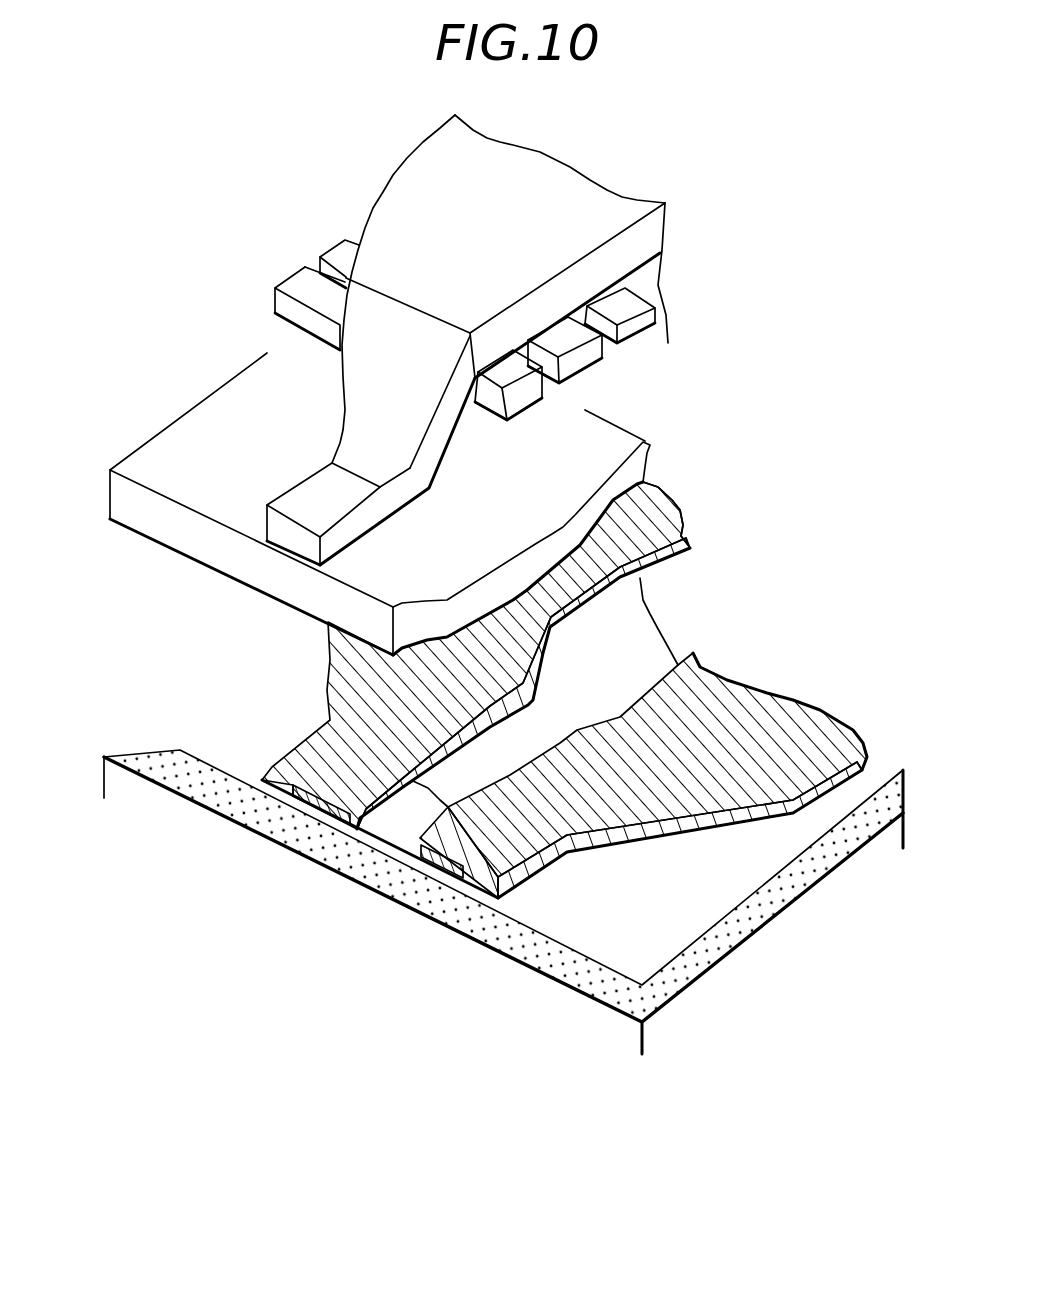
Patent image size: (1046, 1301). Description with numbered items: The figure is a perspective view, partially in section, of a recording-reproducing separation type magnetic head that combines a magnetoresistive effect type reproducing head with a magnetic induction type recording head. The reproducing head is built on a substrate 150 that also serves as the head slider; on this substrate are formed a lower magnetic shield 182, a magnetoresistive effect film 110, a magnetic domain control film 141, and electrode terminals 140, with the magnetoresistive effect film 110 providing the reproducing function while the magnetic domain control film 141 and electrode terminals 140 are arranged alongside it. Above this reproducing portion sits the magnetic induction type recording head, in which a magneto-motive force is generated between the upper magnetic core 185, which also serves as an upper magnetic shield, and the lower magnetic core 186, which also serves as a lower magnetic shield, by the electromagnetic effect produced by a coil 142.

The magnetoresistive effect film 110 is at (380, 873).
The electrode terminals 140 is at (564, 690).
The magnetic domain control film 141 is at (378, 894).
The coil 142 is at (547, 330).
The substrate 150 is at (503, 932).
The lower magnetic shield 182 is at (503, 910).
The upper magnetic core 185 is at (357, 450).
The lower magnetic core 186 is at (347, 504).